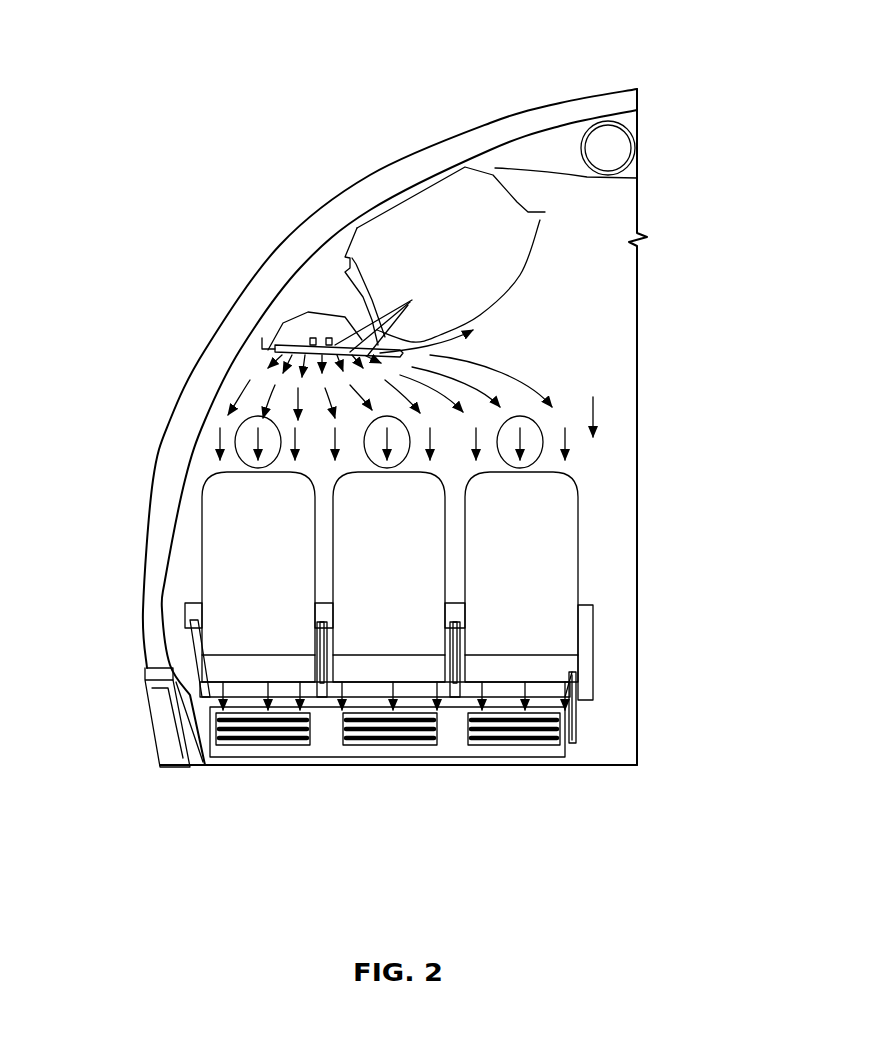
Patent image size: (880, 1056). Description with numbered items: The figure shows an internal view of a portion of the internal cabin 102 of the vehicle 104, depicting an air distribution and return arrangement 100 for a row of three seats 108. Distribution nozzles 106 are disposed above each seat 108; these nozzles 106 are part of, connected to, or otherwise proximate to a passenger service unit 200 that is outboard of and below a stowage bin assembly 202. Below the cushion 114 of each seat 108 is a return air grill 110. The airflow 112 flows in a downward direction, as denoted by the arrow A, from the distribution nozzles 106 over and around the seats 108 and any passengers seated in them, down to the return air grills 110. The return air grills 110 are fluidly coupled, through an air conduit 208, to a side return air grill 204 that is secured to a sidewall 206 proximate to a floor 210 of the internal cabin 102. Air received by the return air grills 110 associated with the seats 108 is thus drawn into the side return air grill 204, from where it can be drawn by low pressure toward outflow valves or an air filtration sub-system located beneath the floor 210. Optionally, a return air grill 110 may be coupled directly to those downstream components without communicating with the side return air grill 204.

The air distribution system 100 is at (517, 350).
The internal cabin 102 is at (633, 286).
The vehicle 104 is at (600, 89).
The distribution nozzles 106 is at (263, 347).
The seats 108 is at (383, 509).
The return air grill 110 is at (273, 725).
The airflow 112 is at (533, 390).
The cushion 114 is at (255, 655).
The passenger service unit (PSU) 200 is at (303, 310).
The stowage bin assembly 202 is at (532, 248).
The side return air grill 204 is at (180, 717).
The sidewall 206 is at (175, 668).
The air conduit 208 is at (202, 735).
The floor 210 is at (627, 763).
The arrow A is at (593, 397).